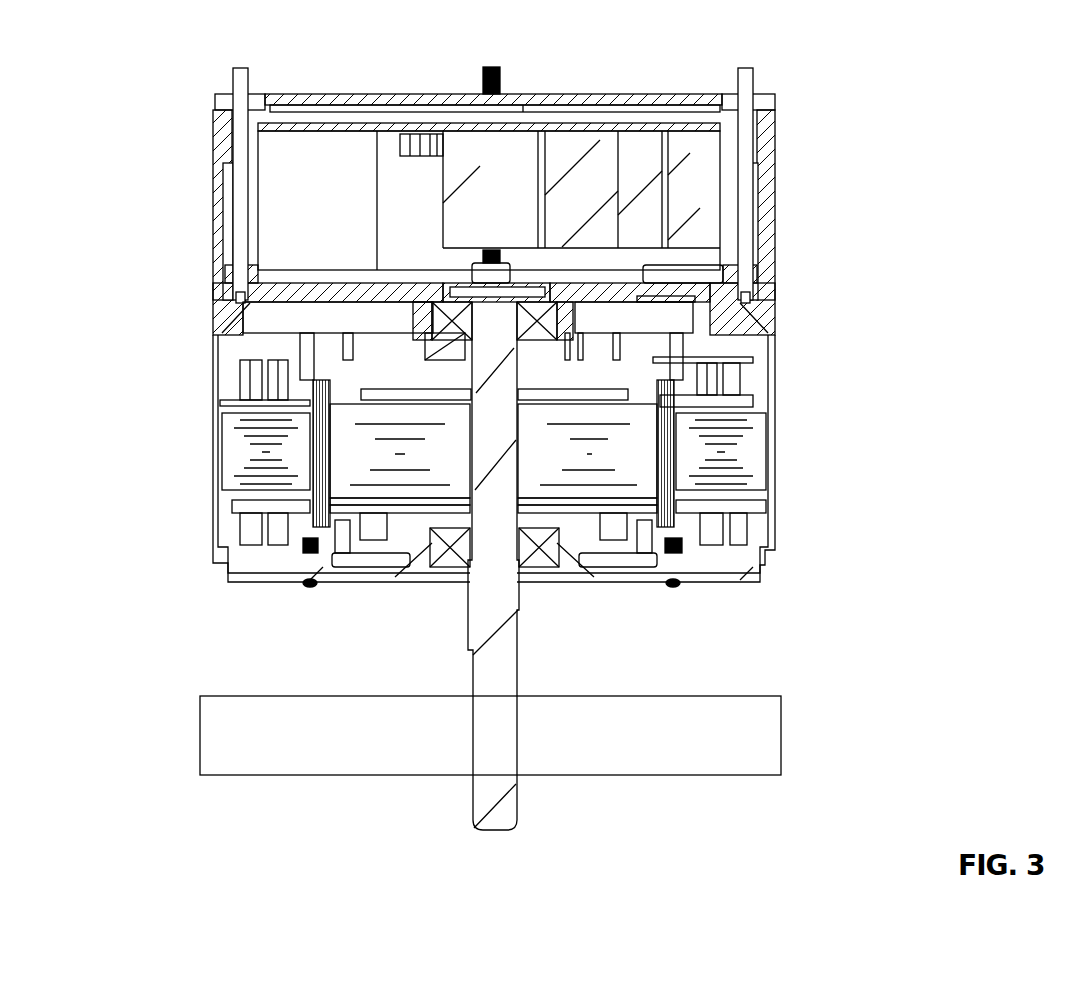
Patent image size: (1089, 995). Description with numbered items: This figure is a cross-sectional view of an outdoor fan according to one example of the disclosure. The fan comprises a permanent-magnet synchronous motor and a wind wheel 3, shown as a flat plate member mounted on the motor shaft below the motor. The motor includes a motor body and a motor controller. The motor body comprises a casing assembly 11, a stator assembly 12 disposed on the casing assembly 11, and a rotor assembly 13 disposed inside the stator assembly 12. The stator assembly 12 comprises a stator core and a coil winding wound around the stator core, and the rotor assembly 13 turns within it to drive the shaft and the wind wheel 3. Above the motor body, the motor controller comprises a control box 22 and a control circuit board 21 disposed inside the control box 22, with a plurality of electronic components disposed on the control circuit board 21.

The wind wheel 3 is at (252, 748).
The casing assembly 11 is at (756, 548).
The stator assembly 12 is at (736, 462).
The rotor assembly 13 is at (427, 457).
The control circuit board 21 is at (375, 127).
The control box 22 is at (217, 190).